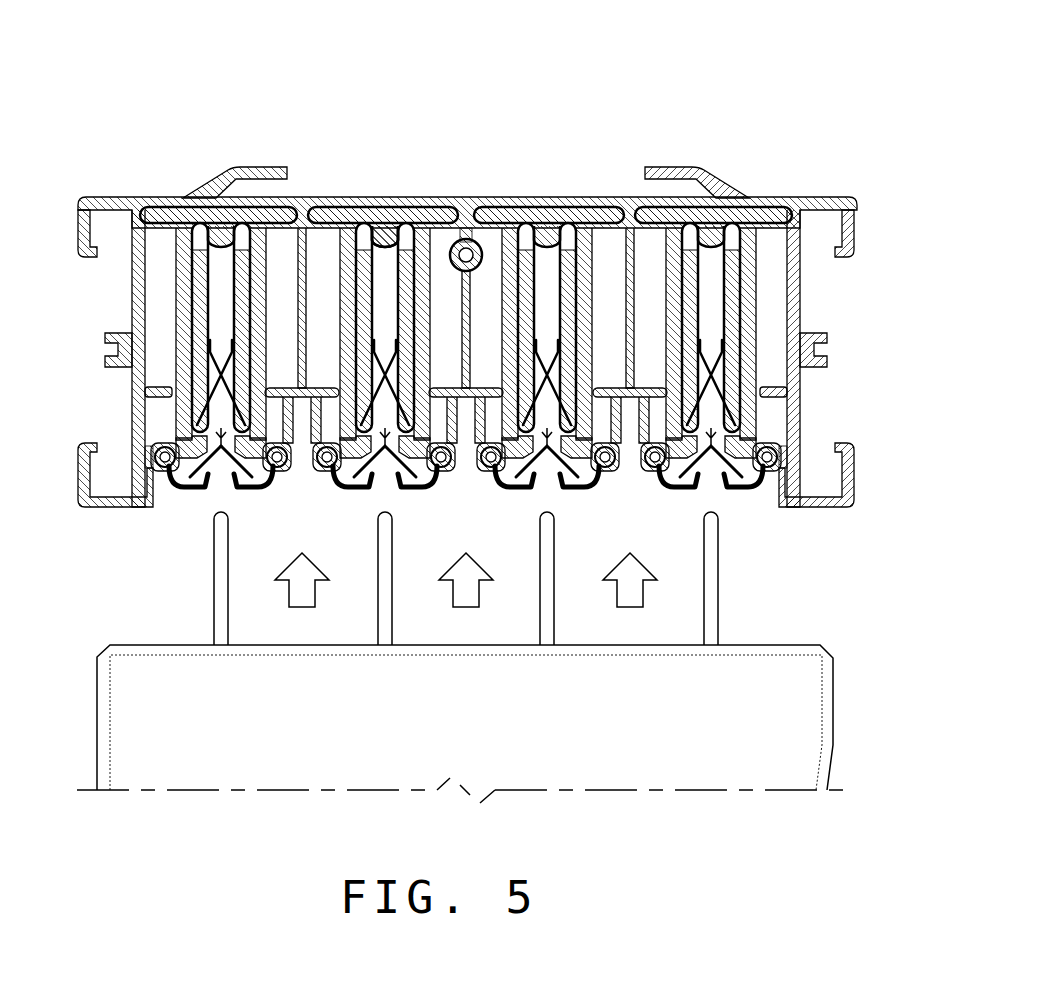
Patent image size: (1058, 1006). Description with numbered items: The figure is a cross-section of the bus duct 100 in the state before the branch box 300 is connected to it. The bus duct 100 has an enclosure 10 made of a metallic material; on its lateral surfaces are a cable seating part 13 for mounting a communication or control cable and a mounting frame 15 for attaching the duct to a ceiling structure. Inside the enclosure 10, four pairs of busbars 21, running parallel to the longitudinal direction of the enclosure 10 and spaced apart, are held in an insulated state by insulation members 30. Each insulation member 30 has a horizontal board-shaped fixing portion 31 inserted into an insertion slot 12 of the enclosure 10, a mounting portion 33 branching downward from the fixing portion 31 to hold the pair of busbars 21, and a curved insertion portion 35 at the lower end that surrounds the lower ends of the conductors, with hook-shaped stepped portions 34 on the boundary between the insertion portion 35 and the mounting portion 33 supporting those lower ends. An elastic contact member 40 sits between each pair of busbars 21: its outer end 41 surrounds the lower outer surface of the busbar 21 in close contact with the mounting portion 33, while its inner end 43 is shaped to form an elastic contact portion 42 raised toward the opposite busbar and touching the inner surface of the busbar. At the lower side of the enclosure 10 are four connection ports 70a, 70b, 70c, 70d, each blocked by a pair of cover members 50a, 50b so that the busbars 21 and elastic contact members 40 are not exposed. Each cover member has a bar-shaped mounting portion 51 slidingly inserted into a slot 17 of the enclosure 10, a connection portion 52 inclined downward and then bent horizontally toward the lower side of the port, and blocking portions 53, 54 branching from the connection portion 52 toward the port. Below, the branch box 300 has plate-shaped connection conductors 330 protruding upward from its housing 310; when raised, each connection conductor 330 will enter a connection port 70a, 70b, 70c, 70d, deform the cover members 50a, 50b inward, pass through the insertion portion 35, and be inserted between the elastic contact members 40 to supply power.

The bus duct 100 is at (468, 331).
The enclosure 10 is at (468, 301).
The insertion slot 12 is at (150, 258).
The cable seating part 13 is at (104, 352).
The mounting frame 15 is at (262, 168).
The slot 17 is at (178, 440).
The busbars 21 is at (740, 310).
The insulation member 30 is at (590, 298).
The fixing portion 31 is at (780, 212).
The mounting portion 33 is at (757, 266).
The hook-shaped stepped portions 34 is at (703, 472).
The insertion portion 35 is at (722, 477).
The elastic contact member 40 is at (381, 365).
The outer end 41 is at (395, 393).
The elastic contact portion 42 is at (467, 238).
The inner end 43 is at (398, 350).
The cover member 50a is at (159, 541).
The cover member 50b is at (272, 483).
The mounting portion 51 is at (162, 472).
The connection portion 52 is at (178, 492).
The blocking portion 53 is at (203, 480).
The blocking portion 54 is at (232, 485).
The connection port 70a is at (197, 400).
The connection port 70b is at (415, 446).
The connection port 70c is at (578, 446).
The connection port 70d is at (725, 418).
The branch box 300 is at (490, 681).
The housing 310 is at (727, 742).
The connection conductors 330 is at (718, 570).